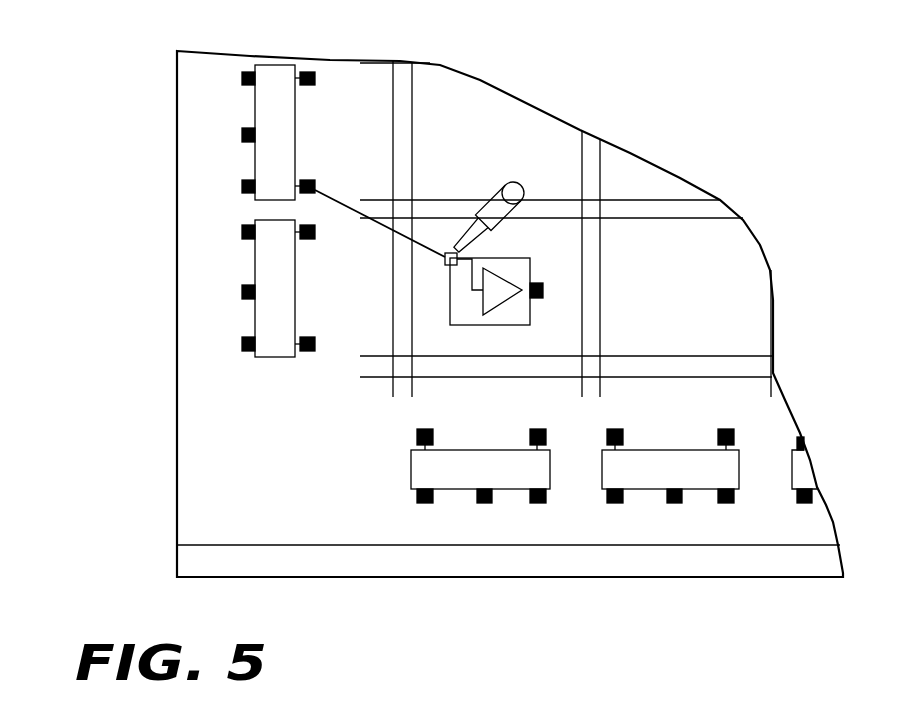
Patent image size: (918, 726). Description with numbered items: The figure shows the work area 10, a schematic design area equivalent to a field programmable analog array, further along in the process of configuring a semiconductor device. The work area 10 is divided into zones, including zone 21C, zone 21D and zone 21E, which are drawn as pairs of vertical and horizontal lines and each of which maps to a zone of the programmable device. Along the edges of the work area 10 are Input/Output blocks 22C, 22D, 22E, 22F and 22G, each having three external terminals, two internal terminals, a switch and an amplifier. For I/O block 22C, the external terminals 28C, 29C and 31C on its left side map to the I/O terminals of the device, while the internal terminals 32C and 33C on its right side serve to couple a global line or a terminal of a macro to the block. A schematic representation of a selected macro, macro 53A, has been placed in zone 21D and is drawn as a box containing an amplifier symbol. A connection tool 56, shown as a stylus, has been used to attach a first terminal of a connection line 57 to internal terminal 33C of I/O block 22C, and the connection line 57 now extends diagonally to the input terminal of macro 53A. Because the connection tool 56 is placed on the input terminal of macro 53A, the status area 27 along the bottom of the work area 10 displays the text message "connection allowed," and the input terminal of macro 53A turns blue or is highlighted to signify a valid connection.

The work area 10 is at (119, 617).
The zone 21C is at (431, 131).
The zone 21D is at (546, 271).
The zone 21E is at (629, 274).
The I/O block 22C is at (255, 110).
The I/O block 22D is at (255, 265).
The I/O block 22E is at (411, 468).
The I/O block 22F is at (671, 449).
The I/O block 22G is at (792, 478).
The external terminal 28C is at (242, 78).
The external terminal 29C is at (242, 135).
The external terminal 31C is at (242, 187).
The internal terminal 32C is at (315, 77).
The internal terminal 33C is at (315, 186).
The macro 53A is at (497, 325).
The connection tool 56 is at (511, 183).
The connection line 57 is at (369, 225).
The status area 27 is at (188, 560).